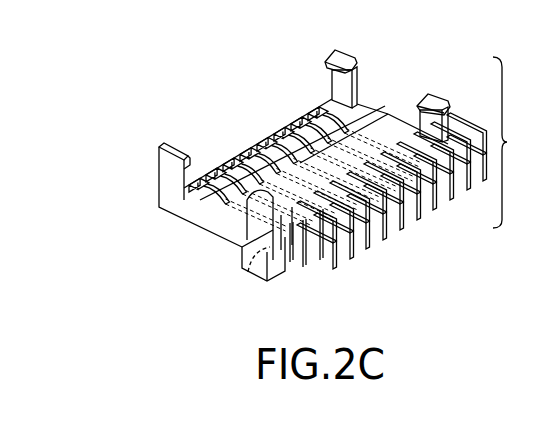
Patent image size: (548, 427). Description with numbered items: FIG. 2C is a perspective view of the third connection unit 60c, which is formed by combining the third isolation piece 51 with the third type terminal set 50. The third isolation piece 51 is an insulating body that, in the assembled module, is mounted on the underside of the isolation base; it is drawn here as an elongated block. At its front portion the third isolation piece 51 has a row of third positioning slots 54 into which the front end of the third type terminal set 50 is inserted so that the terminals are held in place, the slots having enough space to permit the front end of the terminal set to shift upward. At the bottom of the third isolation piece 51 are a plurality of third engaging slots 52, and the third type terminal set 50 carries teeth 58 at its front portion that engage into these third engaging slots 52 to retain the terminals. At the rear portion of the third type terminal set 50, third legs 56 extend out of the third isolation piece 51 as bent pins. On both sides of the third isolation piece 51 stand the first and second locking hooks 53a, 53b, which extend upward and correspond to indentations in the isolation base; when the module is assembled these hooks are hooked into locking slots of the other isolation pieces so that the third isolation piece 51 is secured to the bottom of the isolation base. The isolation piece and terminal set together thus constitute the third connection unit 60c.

The third type terminal set 50 is at (200, 247).
The third isolation piece 51 is at (393, 125).
The third engaging slots 52 is at (283, 267).
The first locking hook 53a is at (440, 100).
The second locking hook 53b is at (345, 50).
The third positioning slots 54 is at (278, 150).
The third legs 56 is at (418, 215).
The teeth 58 is at (246, 281).
The third connection unit 60c is at (300, 90).